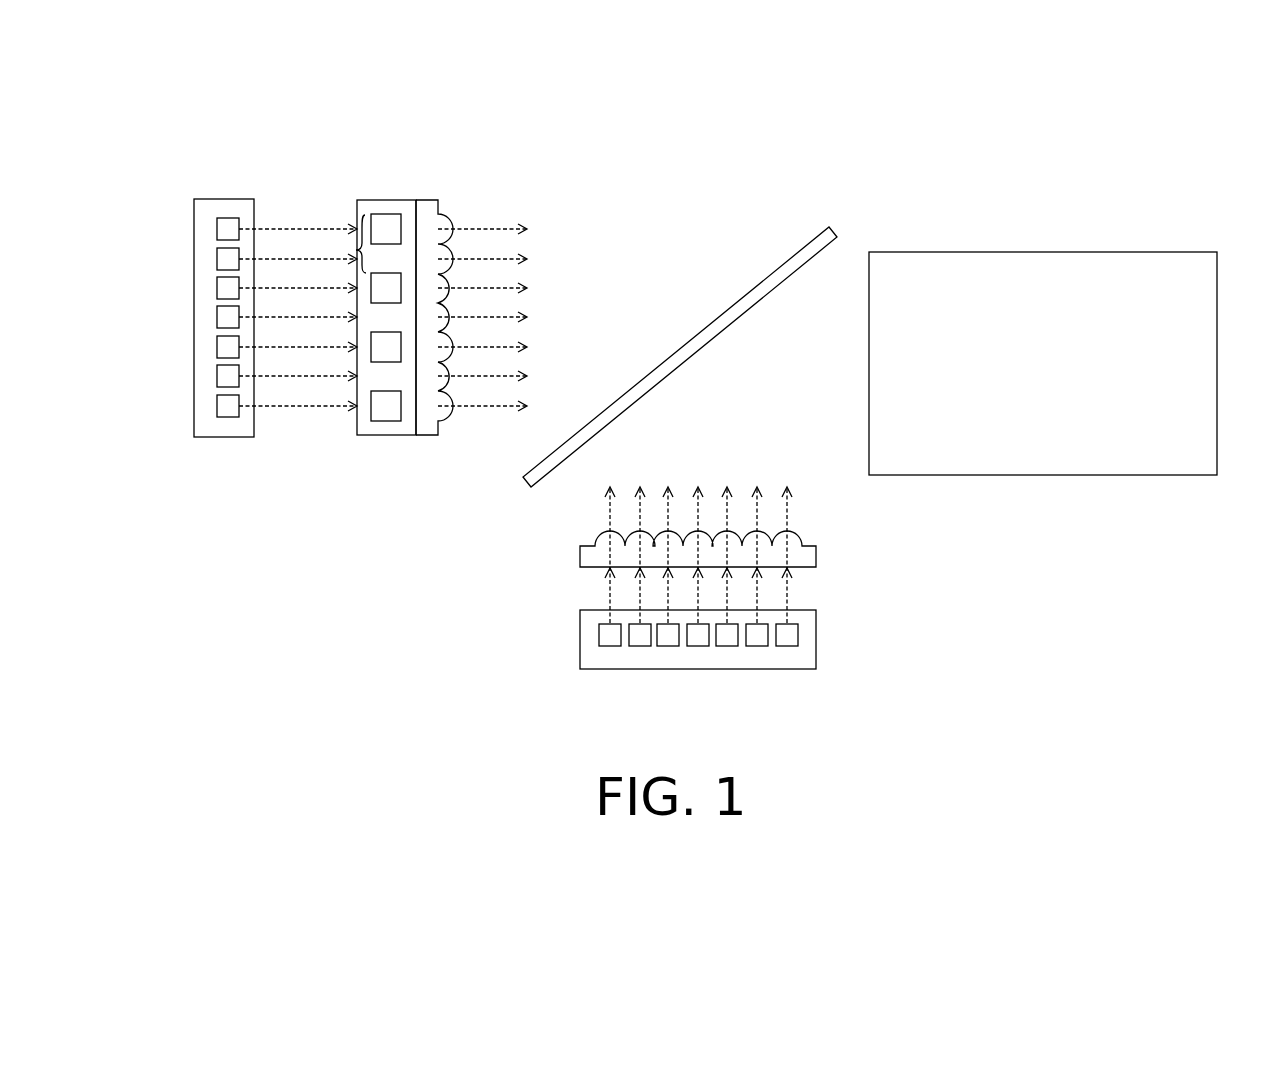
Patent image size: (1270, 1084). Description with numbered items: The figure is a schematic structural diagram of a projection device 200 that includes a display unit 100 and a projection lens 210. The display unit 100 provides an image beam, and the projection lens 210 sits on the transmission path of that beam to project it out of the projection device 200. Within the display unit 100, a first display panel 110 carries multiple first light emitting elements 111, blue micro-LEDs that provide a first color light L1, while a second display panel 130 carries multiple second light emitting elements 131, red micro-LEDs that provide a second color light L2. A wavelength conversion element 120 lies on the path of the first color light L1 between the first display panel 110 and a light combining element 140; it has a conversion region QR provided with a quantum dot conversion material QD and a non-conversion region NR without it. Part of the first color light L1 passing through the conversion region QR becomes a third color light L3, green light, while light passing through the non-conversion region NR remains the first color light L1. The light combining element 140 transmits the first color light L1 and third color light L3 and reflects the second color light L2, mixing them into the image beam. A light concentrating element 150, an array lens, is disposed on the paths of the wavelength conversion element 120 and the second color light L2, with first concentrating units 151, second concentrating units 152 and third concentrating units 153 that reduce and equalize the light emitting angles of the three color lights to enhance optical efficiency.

The display unit 100 is at (912, 140).
The first display panel 110 is at (224, 437).
The first light emitting elements 111 is at (228, 229).
The wavelength conversion element 120 is at (368, 437).
The quantum dot conversion material QD is at (388, 222).
The conversion region QR is at (363, 215).
The non-conversion region NR is at (353, 251).
The second display panel 130 is at (817, 642).
The second light emitting elements 131 is at (787, 637).
The light combining element 140 is at (797, 250).
The light concentrating element 150 is at (142, 60).
The first concentrating units 151 is at (440, 243).
The second concentrating units 152 is at (505, 170).
The third concentrating units 153 is at (828, 528).
The projection device 200 is at (1243, 722).
The projection lens 210 is at (1157, 252).
The first color light L1 is at (287, 378).
The second color light L2 is at (790, 598).
The third color light L3 is at (465, 405).